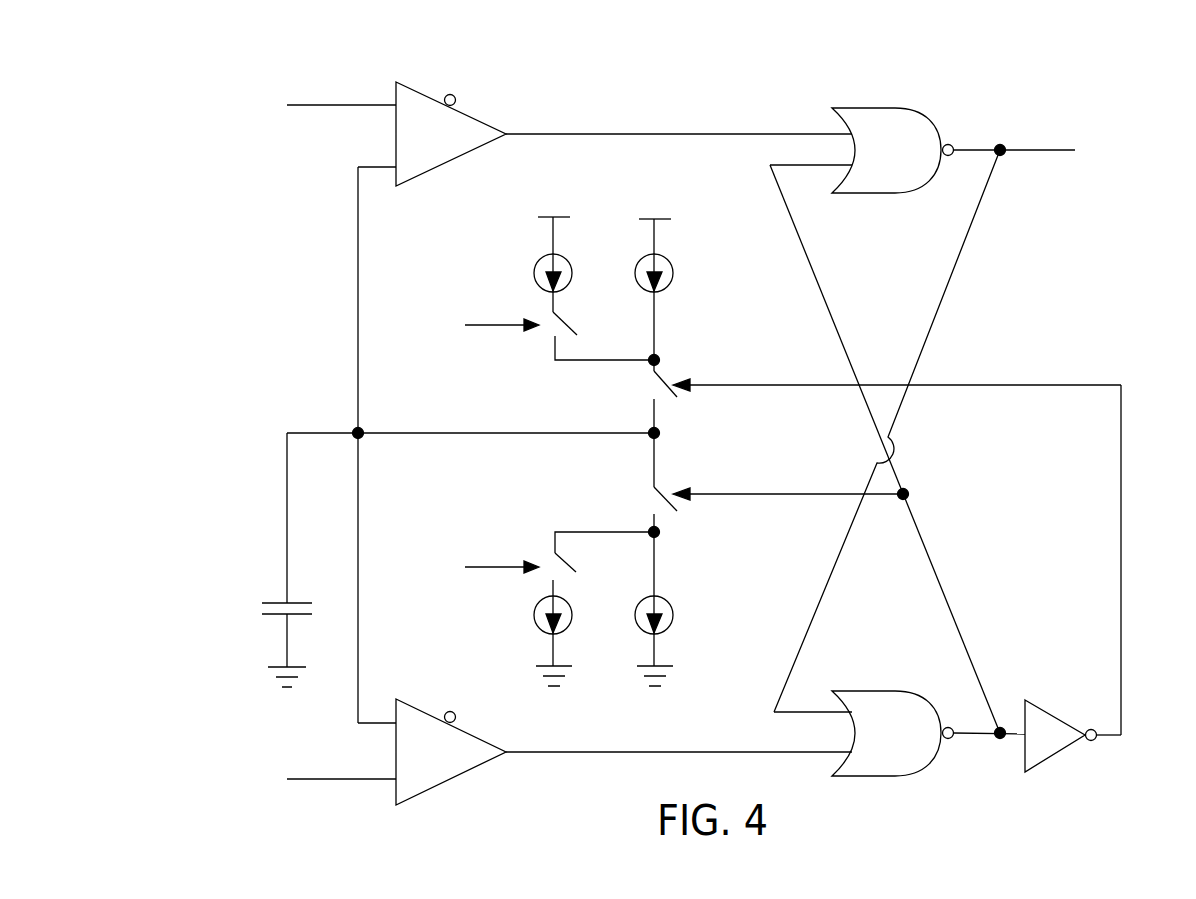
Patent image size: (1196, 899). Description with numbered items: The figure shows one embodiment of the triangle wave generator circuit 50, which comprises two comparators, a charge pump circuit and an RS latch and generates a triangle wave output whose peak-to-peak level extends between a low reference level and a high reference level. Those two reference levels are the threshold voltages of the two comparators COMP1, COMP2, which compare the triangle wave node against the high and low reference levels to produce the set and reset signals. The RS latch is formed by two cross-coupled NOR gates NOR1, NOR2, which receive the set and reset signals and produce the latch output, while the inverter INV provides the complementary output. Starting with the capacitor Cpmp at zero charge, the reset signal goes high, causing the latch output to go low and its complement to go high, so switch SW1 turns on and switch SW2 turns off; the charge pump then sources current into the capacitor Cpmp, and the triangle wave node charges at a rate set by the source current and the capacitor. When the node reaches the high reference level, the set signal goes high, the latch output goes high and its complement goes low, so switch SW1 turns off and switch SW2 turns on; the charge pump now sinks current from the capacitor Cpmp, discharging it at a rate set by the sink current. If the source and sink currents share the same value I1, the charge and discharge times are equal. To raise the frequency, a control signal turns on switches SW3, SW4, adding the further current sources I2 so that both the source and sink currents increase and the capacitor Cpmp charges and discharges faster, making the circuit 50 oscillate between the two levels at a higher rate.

The triangle wave generator circuit 50 is at (1052, 88).
The comparator COMP1 is at (451, 134).
The comparator COMP2 is at (451, 752).
The NOR gate NOR1 is at (893, 150).
The NOR gate NOR2 is at (893, 733).
The inverter INV is at (1061, 736).
The switch SW1 is at (638, 396).
The switch SW2 is at (638, 508).
The switch SW3 is at (603, 331).
The switch SW4 is at (604, 558).
The current source I1 is at (668, 442).
The current source I2 is at (544, 441).
The capacitor Cpmp is at (258, 611).